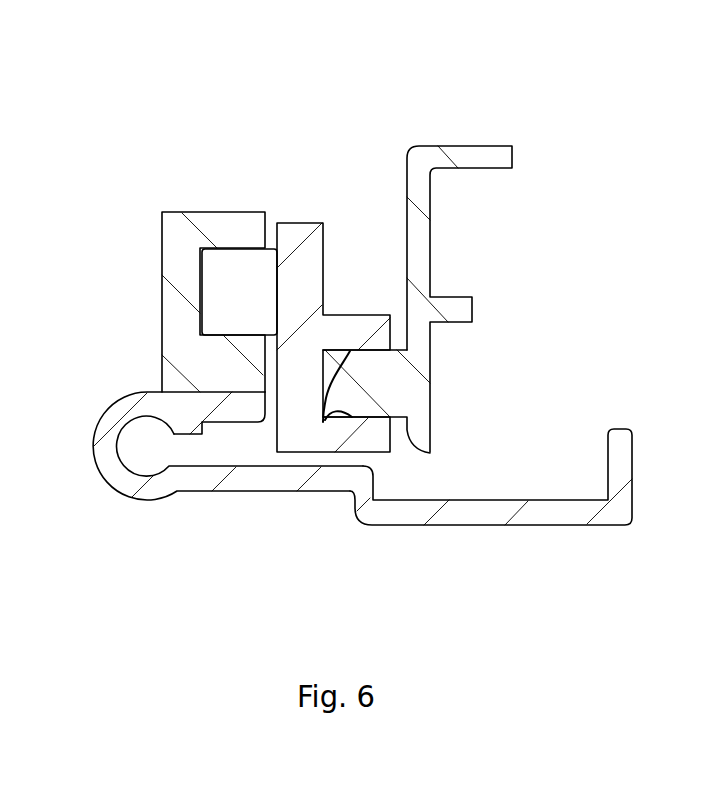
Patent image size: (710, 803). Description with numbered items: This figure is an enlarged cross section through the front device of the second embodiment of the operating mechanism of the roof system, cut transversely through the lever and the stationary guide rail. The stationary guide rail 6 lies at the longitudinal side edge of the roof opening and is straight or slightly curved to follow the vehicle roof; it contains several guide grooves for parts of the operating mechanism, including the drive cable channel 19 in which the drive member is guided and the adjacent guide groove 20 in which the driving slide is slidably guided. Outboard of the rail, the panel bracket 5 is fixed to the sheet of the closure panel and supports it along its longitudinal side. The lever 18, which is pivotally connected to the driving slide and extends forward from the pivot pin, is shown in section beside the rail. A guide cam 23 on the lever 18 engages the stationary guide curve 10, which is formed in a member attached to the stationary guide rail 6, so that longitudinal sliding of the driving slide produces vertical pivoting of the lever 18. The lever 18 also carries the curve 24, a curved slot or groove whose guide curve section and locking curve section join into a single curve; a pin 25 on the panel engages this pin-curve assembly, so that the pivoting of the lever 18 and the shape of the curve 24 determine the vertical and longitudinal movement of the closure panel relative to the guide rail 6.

The panel bracket 5 is at (417, 327).
The stationary guide rail 6 is at (334, 499).
The stationary guide curve 10 is at (216, 250).
The lever 18 is at (300, 235).
The drive cable channel 19 is at (137, 446).
The guide groove 20 is at (225, 443).
The guide cam 23 is at (233, 275).
The curve 24 is at (326, 425).
The pin 25 is at (372, 388).